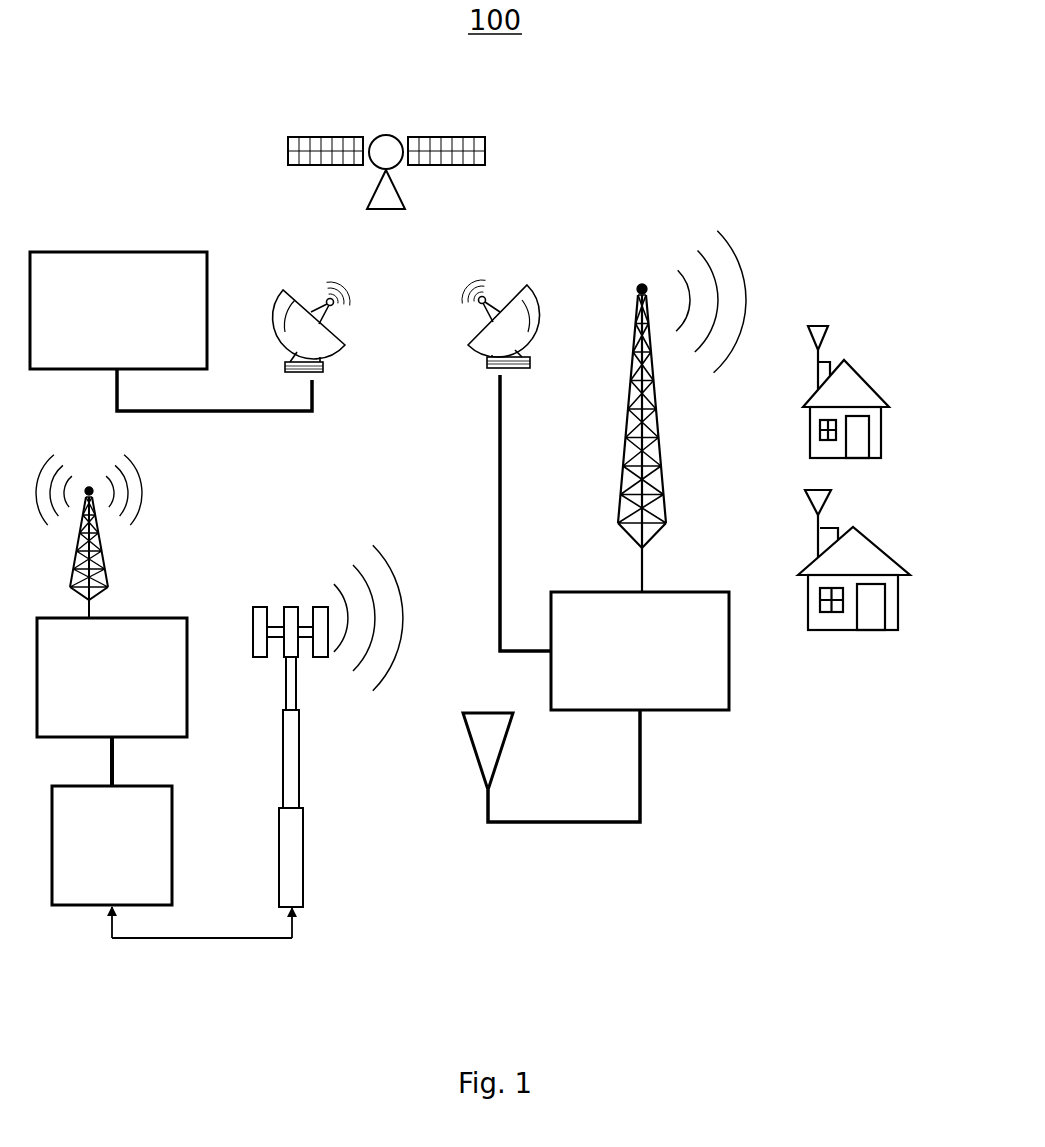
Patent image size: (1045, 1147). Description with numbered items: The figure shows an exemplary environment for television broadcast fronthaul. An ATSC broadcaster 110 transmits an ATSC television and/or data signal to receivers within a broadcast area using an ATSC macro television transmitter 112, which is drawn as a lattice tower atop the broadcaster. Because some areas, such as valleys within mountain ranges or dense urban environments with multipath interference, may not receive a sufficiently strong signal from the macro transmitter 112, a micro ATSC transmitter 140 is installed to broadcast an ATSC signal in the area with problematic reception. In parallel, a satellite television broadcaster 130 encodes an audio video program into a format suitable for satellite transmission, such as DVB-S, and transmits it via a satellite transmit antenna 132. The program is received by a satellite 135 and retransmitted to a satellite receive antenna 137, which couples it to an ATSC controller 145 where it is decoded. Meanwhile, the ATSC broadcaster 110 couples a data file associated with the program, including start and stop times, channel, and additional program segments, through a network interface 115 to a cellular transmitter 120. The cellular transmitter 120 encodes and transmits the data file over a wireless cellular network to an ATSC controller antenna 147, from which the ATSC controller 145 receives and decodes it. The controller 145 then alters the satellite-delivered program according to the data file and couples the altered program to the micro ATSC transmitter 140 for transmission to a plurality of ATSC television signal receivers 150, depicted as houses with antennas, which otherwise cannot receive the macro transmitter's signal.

The ATSC broadcaster 110 is at (97, 664).
The ATSC macro television transmitter 112 is at (110, 551).
The network interface 115 is at (97, 834).
The cellular transmitter 120 is at (307, 861).
The satellite television broadcaster 130 is at (103, 298).
The satellite transmit antenna 132 is at (336, 364).
The satellite 135 is at (424, 124).
The satellite receive antenna 137 is at (513, 278).
The micro ATSC transmitter 140 is at (641, 278).
The ATSC controller 145 is at (625, 640).
The ATSC controller antenna 147 is at (512, 761).
The ATSC television signal receivers 150 is at (866, 473).